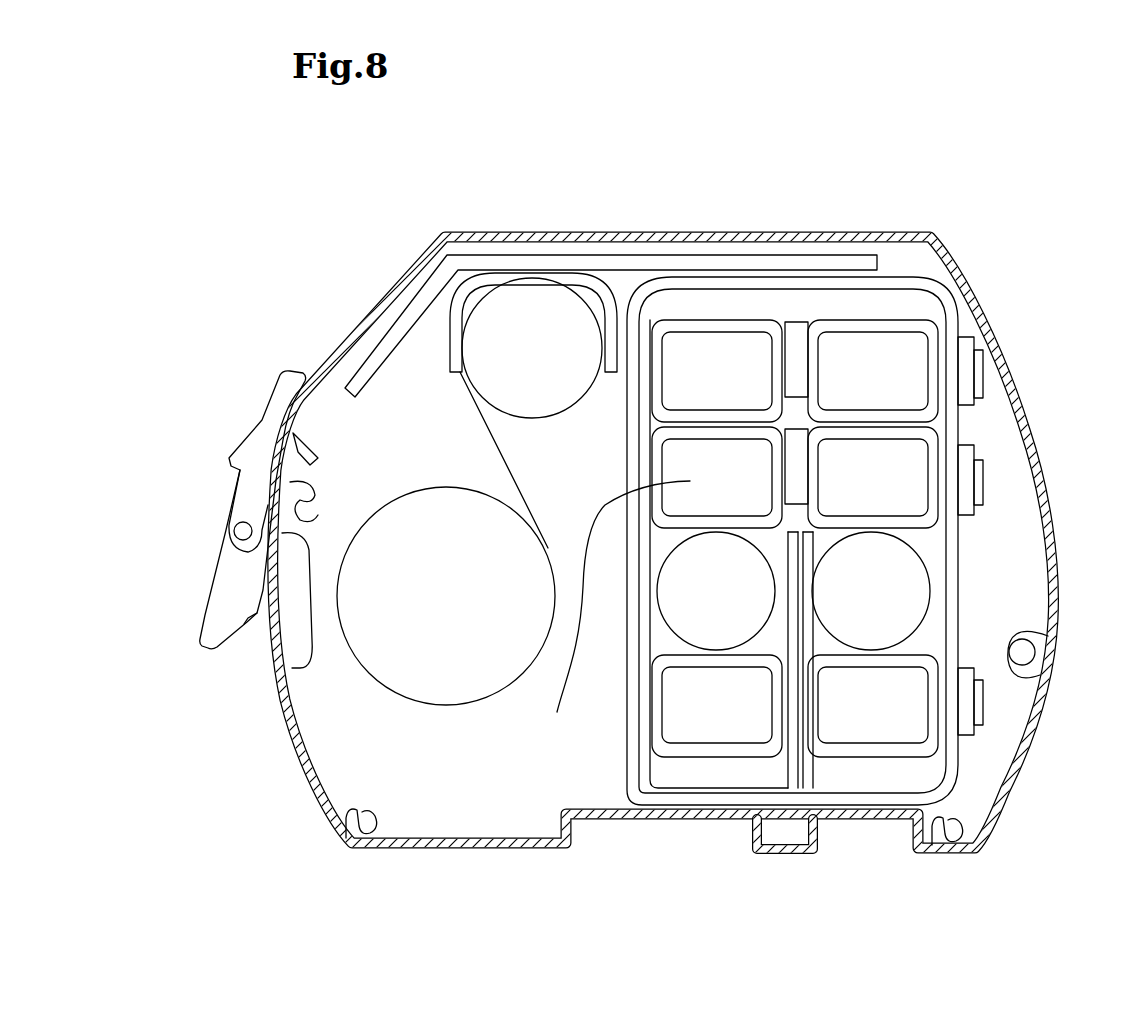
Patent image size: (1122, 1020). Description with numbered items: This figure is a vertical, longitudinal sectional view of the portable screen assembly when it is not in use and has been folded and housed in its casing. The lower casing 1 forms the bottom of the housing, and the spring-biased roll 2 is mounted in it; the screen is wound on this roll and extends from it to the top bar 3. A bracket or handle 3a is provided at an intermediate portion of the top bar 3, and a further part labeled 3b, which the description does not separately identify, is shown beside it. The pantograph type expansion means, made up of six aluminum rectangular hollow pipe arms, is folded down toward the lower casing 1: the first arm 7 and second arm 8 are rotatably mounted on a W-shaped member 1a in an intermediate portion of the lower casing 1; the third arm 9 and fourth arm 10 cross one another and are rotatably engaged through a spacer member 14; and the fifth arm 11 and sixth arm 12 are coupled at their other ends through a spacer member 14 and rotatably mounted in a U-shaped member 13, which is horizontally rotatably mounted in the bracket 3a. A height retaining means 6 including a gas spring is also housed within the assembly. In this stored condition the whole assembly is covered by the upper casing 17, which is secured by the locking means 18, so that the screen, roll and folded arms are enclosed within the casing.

The lower casing 1 is at (562, 868).
The W-shaped member 1a is at (948, 775).
The spring-biased roll 2 is at (433, 637).
The top bar 3 is at (528, 333).
The bracket or handle 3a is at (485, 262).
The roller holder 3b is at (598, 282).
The height retaining means 6 is at (717, 595).
The first arm 7 is at (893, 697).
The second arm 8 is at (720, 715).
The third arm 9 is at (557, 712).
The fourth arm 10 is at (900, 474).
The fifth arm 11 is at (900, 392).
The sixth arm 12 is at (718, 373).
The U-shaped member 13 is at (930, 290).
The spacer member 14 is at (800, 335).
The upper casing 17 is at (403, 267).
The locking means 18 is at (262, 432).